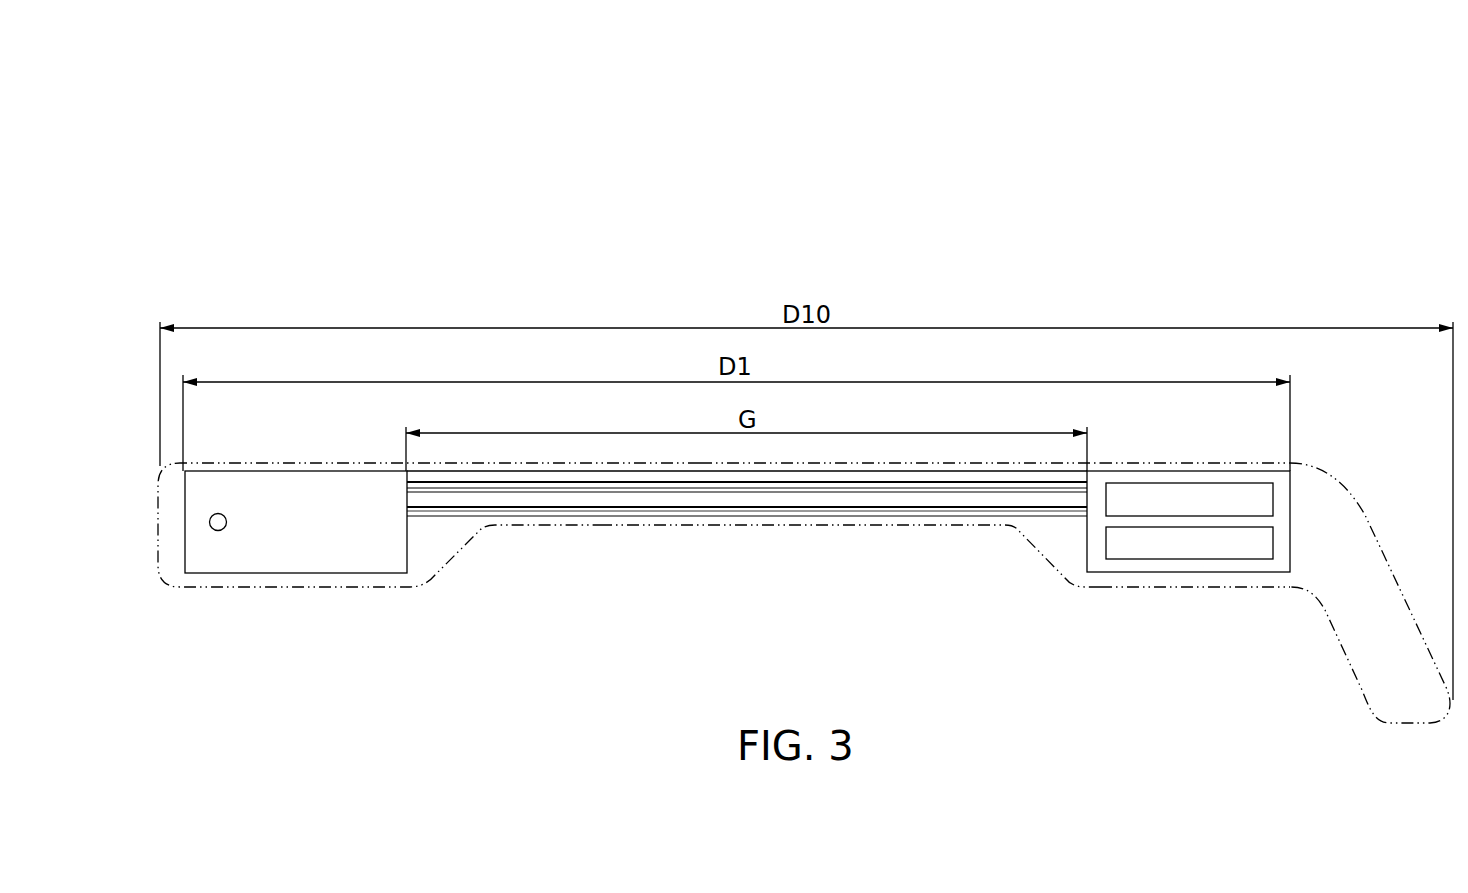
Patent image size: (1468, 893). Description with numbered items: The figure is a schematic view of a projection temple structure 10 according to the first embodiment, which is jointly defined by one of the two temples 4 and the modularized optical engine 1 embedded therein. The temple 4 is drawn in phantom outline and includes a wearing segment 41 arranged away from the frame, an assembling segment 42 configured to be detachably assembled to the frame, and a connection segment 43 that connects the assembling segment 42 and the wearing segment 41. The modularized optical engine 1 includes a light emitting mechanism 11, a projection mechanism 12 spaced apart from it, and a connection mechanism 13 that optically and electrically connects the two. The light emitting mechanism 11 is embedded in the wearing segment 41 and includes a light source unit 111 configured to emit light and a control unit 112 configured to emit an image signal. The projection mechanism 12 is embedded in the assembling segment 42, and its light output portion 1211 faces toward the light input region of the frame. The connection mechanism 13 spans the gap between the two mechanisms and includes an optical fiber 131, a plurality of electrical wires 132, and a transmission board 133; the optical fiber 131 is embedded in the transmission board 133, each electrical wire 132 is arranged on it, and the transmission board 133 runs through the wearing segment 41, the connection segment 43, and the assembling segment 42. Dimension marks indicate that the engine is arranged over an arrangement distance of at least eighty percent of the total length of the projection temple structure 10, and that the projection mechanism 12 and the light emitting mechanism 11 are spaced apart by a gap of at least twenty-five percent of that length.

The projection temple structure 10 is at (188, 271).
The modularized optical engine 1 is at (533, 519).
The projection mechanism 12 is at (280, 563).
The light output portion 1211 is at (207, 520).
The connection mechanism 13 is at (747, 548).
The optical fiber 131 is at (647, 507).
The electrical wires 132 is at (762, 487).
The transmission board 133 is at (612, 573).
The light emitting mechanism 11 is at (1188, 573).
The light source unit 111 is at (1133, 549).
The control unit 112 is at (1211, 502).
The temple 4 is at (804, 593).
The wearing segment 41 is at (1267, 578).
The assembling segment 42 is at (365, 578).
The connection segment 43 is at (910, 522).